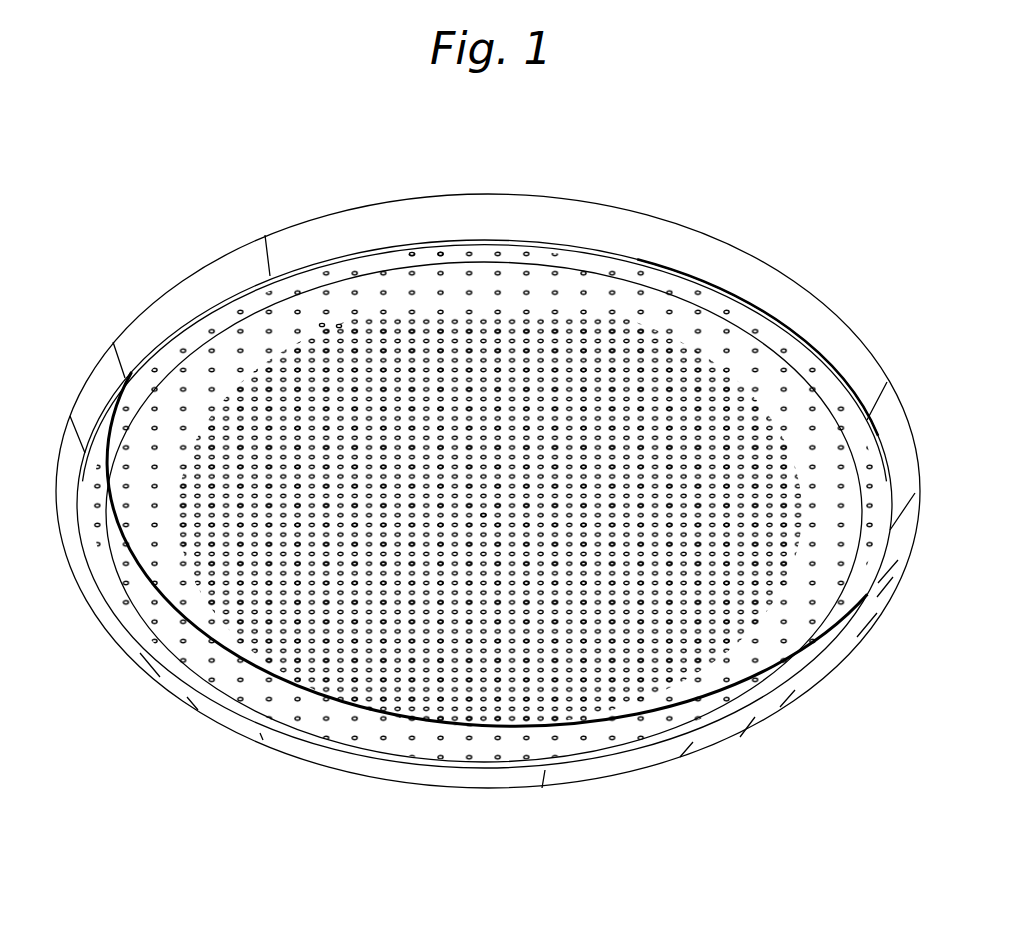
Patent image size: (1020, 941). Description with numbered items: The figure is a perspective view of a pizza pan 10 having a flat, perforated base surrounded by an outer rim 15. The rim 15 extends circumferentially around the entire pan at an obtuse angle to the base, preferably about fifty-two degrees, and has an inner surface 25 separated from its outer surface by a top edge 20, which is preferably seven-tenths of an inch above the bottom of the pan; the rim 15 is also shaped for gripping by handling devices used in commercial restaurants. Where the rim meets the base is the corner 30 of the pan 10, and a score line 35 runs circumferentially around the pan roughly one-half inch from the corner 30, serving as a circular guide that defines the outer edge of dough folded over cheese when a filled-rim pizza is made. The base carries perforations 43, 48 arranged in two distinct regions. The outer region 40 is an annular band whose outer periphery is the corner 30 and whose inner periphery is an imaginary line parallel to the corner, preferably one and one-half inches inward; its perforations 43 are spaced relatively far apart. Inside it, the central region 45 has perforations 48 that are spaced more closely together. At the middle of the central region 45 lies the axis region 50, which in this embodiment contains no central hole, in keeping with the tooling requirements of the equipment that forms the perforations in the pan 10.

The pan 10 is at (165, 226).
The outer rim 15 is at (475, 779).
The top edge 20 is at (98, 362).
The inner surface 25 is at (157, 303).
The corner 30 is at (670, 270).
The score line 35 is at (597, 273).
The outer region 40 is at (197, 420).
The perforations 43 is at (442, 247).
The central region 45 is at (340, 475).
The perforations 48 is at (340, 325).
The axis region 50 is at (480, 516).